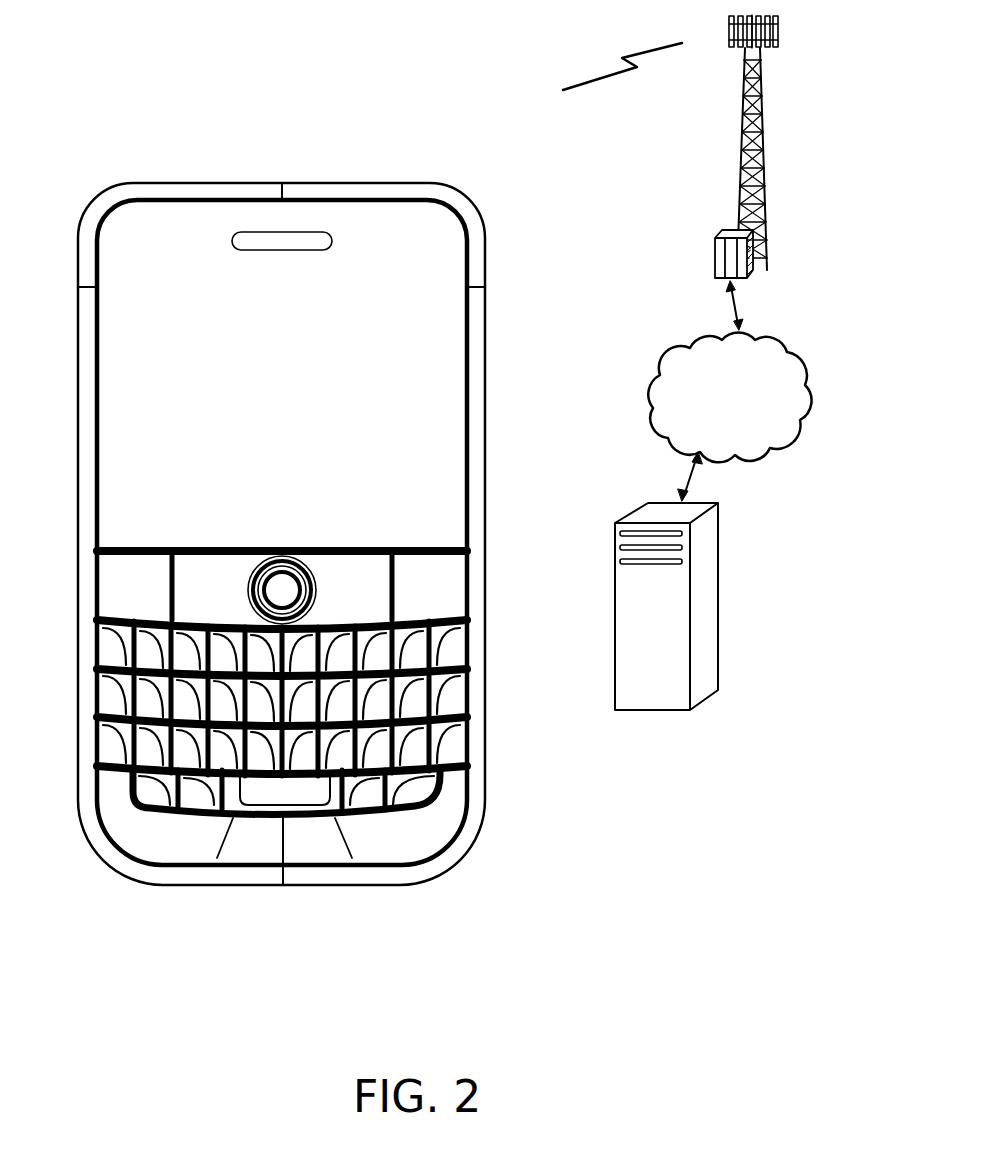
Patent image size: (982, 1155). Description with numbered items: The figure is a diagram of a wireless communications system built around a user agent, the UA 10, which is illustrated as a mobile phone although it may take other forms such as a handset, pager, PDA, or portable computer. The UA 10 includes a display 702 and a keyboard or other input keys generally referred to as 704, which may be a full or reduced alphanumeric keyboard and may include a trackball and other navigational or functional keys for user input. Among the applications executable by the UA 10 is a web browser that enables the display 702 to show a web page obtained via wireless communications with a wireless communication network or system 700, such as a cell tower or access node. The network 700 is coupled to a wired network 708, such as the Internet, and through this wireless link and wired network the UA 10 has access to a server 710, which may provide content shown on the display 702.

The UA 10 is at (232, 887).
The display 702 is at (492, 268).
The keyboard or other input keys 704 is at (523, 503).
The wireless communication network or system 700 is at (740, 157).
The wired network 708 is at (668, 433).
The server 710 is at (652, 711).